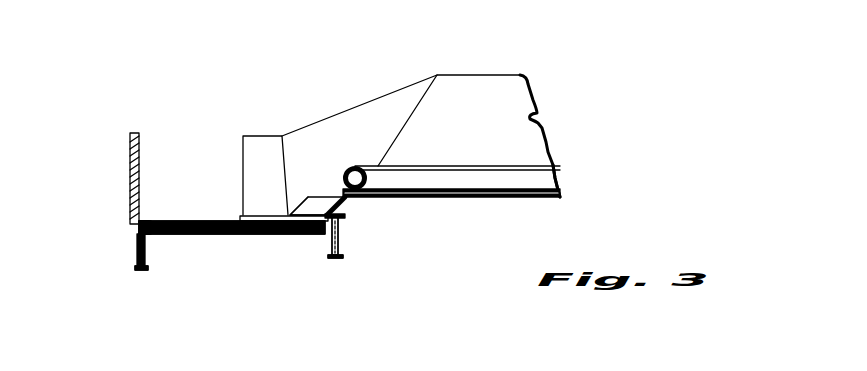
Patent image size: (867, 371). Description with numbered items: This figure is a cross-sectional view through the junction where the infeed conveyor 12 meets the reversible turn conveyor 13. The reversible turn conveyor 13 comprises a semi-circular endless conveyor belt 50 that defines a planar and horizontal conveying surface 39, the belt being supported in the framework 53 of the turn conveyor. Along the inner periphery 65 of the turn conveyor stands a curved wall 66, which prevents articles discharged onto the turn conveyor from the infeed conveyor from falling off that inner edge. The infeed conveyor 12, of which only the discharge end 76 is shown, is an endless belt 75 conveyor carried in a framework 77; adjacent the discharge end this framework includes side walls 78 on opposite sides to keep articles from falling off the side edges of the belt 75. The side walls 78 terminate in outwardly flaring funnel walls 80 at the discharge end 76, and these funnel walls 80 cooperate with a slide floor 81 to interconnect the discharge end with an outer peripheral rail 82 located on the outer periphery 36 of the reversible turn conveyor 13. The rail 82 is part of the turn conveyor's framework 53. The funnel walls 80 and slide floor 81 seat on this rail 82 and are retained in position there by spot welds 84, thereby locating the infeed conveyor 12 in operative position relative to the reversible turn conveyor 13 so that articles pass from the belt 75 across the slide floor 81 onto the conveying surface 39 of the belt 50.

The infeed conveyor 12 is at (570, 148).
The reversible turn conveyor 13 is at (117, 233).
The outer periphery 36 is at (325, 238).
The conveying surface 39 is at (203, 221).
The endless conveyor belt 50 is at (203, 235).
The framework 53 is at (128, 276).
The inner periphery 65 is at (143, 220).
The curved wall 66 is at (135, 133).
The endless belt 75 is at (468, 166).
The discharge end 76 is at (354, 166).
The framework 77 is at (536, 118).
The side walls 78 is at (479, 98).
The funnel walls 80 is at (328, 137).
The slide floor 81 is at (345, 203).
The outer peripheral rail 82 is at (340, 217).
The spot welds 84 is at (313, 215).